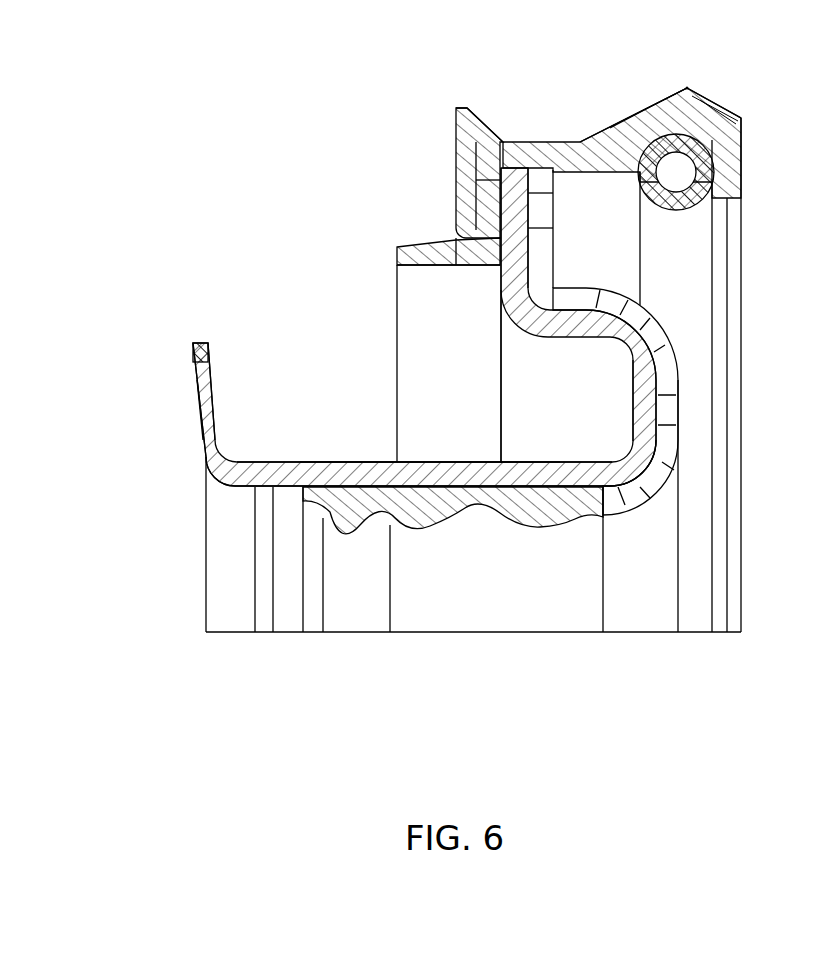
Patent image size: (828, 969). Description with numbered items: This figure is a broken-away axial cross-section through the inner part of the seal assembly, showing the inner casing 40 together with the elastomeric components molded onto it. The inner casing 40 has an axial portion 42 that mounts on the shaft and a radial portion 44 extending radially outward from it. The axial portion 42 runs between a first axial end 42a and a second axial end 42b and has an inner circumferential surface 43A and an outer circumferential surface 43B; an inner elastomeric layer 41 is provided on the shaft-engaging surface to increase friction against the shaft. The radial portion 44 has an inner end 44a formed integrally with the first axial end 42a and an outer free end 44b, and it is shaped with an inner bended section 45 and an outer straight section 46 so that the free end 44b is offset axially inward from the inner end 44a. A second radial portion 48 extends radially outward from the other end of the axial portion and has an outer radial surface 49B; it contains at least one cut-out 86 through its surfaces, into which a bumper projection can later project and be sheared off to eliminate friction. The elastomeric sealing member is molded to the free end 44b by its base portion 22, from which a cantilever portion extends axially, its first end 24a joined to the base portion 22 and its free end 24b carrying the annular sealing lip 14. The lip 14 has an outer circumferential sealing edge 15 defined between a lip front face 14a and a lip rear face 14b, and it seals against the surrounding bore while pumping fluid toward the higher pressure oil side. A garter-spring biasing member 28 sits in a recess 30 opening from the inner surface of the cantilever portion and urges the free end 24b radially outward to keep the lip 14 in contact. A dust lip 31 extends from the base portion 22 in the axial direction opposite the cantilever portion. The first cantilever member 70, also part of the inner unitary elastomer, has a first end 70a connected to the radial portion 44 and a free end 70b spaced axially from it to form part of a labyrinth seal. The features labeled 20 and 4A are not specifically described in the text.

The sealing lip 14 is at (698, 96).
The lip front face 14a is at (704, 98).
The lip rear face 14b is at (652, 106).
The outer circumferential sealing edge 15 is at (688, 88).
The body 20 is at (528, 122).
The base portion 22 is at (634, 92).
The first end of cantilever portion 24a is at (590, 145).
The free end of cantilever portion 24b is at (730, 152).
The biasing member 28 is at (702, 262).
The recess 30 is at (645, 198).
The dust lip 31 is at (462, 112).
The inner casing 40 is at (158, 475).
The inner elastomeric layer 41 is at (370, 522).
The axial portion 42 is at (349, 448).
The first axial end 42a is at (612, 490).
The second axial end 42b is at (225, 486).
The inner circumferential surface 43A is at (470, 516).
The outer circumferential surface 43B is at (432, 462).
The radial portion 44 is at (478, 314).
The inner end of radial portion 44a is at (640, 450).
The outer free end of radial portion 44b is at (520, 176).
The inner bended section 45 is at (655, 375).
The outer straight section 46 is at (500, 222).
The second radial portion 48 is at (208, 417).
The outer radial surface 49B is at (196, 437).
The first cantilever member 70 is at (388, 245).
The first end of first cantilever member 70a is at (503, 359).
The spacer bottom surface 70b is at (398, 266).
The cut-out 86 is at (197, 356).
The upright wall 4A is at (214, 397).